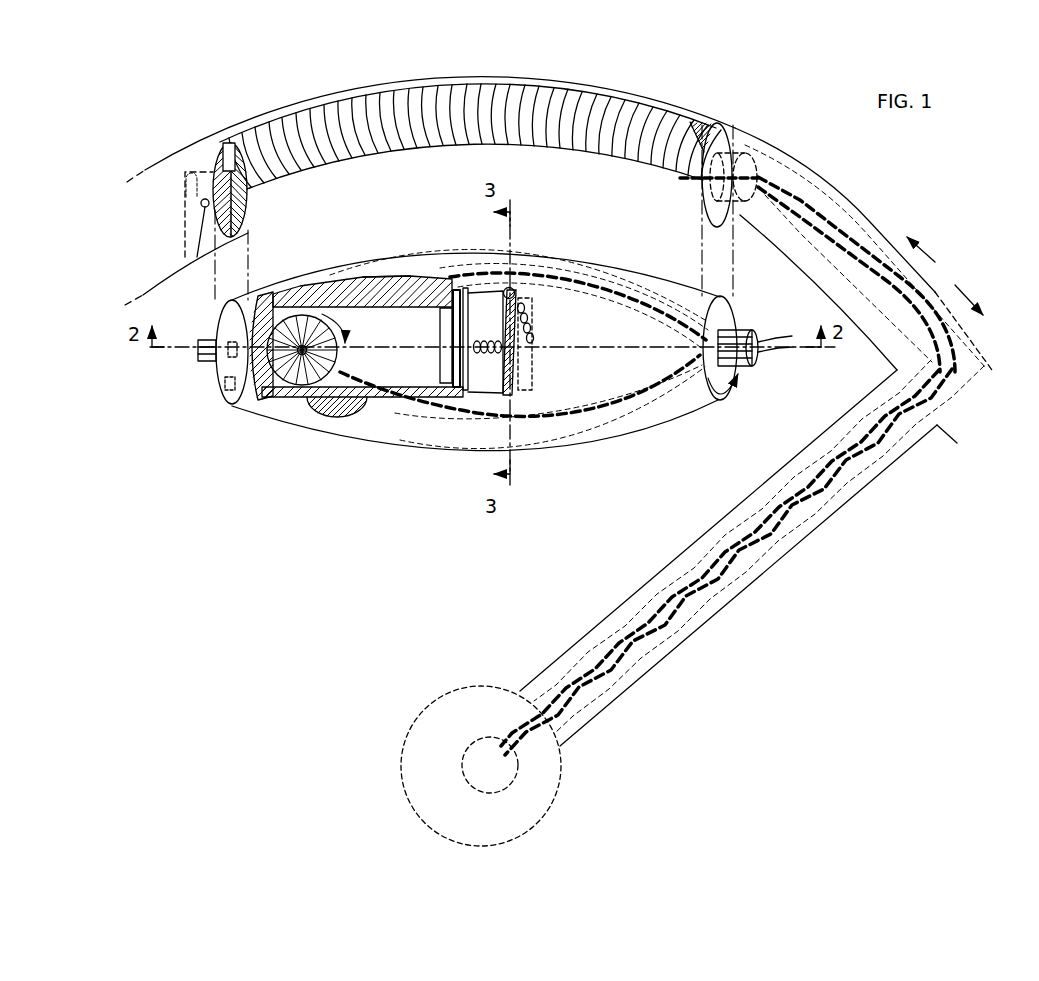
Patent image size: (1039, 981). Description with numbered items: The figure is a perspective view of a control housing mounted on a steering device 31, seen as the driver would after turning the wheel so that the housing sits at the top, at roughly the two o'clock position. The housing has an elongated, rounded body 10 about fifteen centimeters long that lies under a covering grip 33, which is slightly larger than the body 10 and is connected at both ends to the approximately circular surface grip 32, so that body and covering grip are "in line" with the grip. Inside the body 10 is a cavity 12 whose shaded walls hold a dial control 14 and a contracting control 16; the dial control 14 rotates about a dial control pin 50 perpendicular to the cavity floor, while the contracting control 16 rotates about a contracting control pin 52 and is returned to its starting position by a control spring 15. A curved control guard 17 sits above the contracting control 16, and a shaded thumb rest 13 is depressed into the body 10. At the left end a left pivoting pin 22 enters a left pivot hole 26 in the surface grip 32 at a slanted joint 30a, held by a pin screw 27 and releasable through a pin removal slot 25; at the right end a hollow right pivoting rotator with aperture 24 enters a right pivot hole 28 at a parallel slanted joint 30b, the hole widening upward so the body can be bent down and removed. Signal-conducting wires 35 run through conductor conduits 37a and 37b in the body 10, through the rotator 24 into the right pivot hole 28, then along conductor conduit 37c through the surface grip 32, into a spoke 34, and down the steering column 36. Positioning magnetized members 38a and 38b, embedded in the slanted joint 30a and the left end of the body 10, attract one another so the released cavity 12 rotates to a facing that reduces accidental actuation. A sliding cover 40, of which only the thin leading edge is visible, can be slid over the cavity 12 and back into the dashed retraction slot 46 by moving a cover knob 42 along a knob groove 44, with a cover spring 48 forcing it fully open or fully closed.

The body 10 is at (617, 423).
The cavity 12 is at (307, 312).
The thumb rest 13 is at (313, 410).
The dial control 14 is at (250, 398).
The control spring 15 is at (530, 368).
The contracting control 16 is at (395, 282).
The control guard 17 is at (455, 290).
The left pivoting pin 22 is at (198, 351).
The right pivoting rotator with aperture 24 is at (760, 360).
The pin removal slot 25 is at (247, 223).
The left pivot hole 26 is at (215, 172).
The pin screw 27 is at (197, 233).
The right pivot hole 28 is at (742, 168).
The slanted joint 30a is at (249, 199).
The slanted joint 30b is at (702, 197).
The steering device 31 is at (588, 604).
The surface grip 32 is at (872, 222).
The covering grip 33 is at (650, 113).
The spoke 34 is at (760, 573).
The signal-conducting wires 35 is at (763, 333).
The steering column 36 is at (556, 772).
The conductor conduit 37a is at (607, 290).
The conductor conduit 37b is at (647, 393).
The conductor conduit 37c is at (843, 257).
The positioning magnetized member 38a is at (225, 147).
The positioning magnetized member 38b is at (222, 390).
The sliding cover 40 is at (363, 277).
The cover knob 42 is at (528, 303).
The knob groove 44 is at (508, 393).
The retraction slot 46 is at (516, 290).
The cover spring 48 is at (533, 318).
The dial control pin 50 is at (297, 352).
The contracting control pin 52 is at (432, 292).